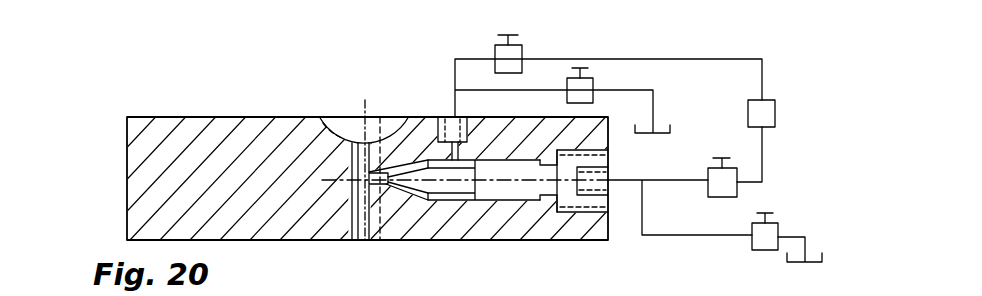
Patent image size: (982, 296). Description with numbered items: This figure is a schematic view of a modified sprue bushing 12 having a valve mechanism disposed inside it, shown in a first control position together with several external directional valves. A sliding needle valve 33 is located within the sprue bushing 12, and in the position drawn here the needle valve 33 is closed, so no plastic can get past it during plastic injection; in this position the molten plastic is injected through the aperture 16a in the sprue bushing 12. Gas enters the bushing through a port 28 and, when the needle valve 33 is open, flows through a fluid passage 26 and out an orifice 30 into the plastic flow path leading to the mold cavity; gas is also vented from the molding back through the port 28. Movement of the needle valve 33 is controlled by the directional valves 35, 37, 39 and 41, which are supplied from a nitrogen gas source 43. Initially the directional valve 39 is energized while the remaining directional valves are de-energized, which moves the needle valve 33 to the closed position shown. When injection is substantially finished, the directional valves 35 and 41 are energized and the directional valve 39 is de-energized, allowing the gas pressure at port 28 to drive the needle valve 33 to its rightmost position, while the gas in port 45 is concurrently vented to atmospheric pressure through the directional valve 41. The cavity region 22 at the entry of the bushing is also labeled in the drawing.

The sprue bushing 12 is at (200, 80).
The spherical cavity 22 is at (335, 115).
The fluid passage 26 is at (414, 80).
The port 28 is at (450, 95).
The orifice 30 is at (426, 261).
The aperture 16a is at (348, 211).
The sliding needle valve 33 is at (485, 158).
The directional valve 35 is at (586, 25).
The directional valve 37 is at (670, 71).
The directional valve 39 is at (814, 150).
The directional valve 41 is at (842, 210).
The nitrogen gas source 43 is at (840, 83).
The port 45 is at (584, 209).